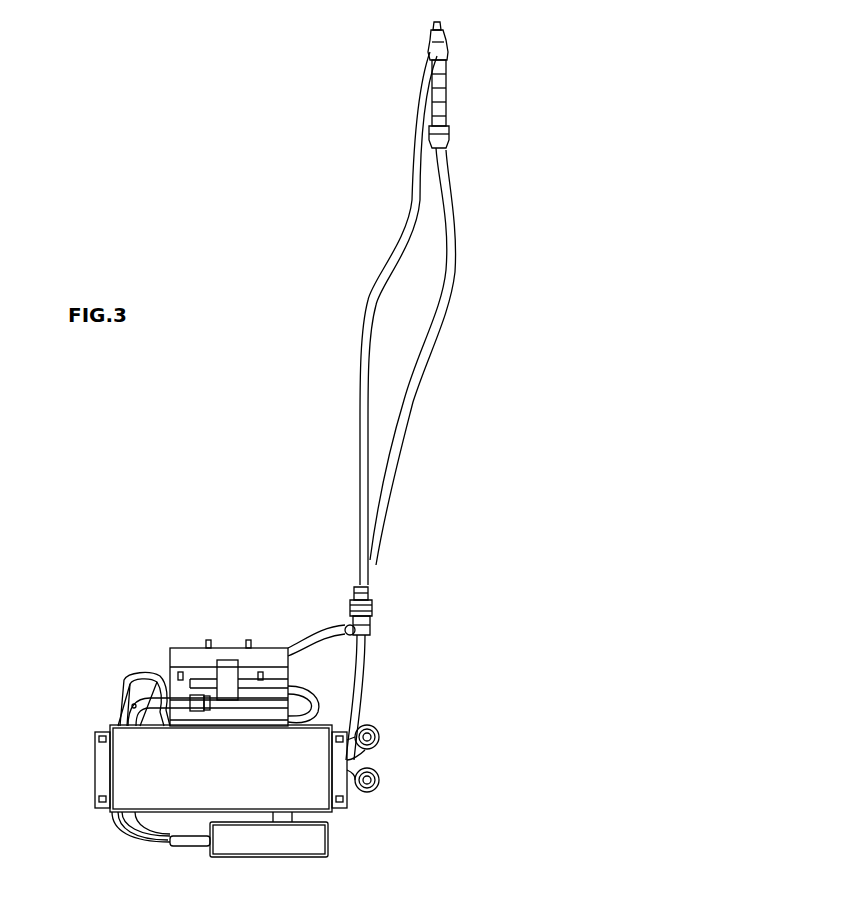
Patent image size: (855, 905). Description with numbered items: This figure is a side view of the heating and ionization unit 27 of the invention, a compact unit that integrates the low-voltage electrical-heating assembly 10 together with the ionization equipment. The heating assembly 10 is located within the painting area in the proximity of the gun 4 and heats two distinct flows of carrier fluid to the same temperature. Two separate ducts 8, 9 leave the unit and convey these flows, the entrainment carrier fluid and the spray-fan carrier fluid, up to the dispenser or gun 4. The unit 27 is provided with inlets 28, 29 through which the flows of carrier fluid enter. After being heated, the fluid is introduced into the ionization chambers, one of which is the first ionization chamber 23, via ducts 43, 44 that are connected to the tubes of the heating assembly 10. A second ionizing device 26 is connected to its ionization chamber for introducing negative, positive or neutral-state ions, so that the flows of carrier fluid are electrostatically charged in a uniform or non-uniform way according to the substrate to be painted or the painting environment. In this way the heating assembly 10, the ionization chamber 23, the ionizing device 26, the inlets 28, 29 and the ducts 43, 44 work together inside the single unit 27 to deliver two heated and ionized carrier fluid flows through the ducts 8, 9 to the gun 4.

The gun 4 is at (446, 100).
The duct 8 is at (368, 305).
The duct 9 is at (421, 362).
The low-voltage electrical-heating assembly 10 is at (218, 786).
The first ionization chamber 23 is at (268, 662).
The second ionizing device 26 is at (280, 838).
The heating and ionization unit 27 is at (133, 637).
The inlet 28 is at (378, 729).
The inlet 29 is at (380, 783).
The duct 43 is at (143, 678).
The duct 44 is at (120, 707).